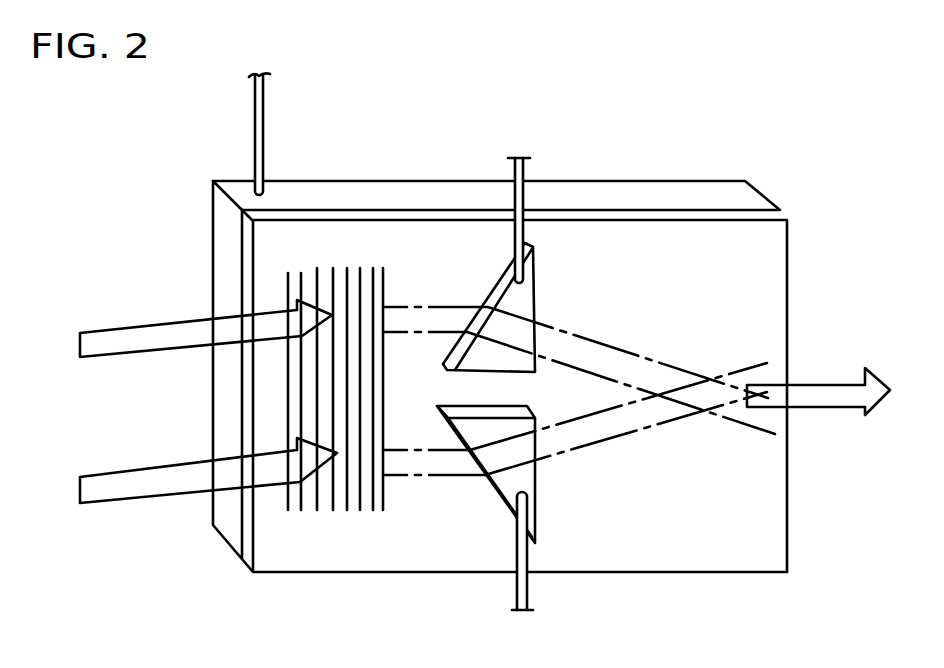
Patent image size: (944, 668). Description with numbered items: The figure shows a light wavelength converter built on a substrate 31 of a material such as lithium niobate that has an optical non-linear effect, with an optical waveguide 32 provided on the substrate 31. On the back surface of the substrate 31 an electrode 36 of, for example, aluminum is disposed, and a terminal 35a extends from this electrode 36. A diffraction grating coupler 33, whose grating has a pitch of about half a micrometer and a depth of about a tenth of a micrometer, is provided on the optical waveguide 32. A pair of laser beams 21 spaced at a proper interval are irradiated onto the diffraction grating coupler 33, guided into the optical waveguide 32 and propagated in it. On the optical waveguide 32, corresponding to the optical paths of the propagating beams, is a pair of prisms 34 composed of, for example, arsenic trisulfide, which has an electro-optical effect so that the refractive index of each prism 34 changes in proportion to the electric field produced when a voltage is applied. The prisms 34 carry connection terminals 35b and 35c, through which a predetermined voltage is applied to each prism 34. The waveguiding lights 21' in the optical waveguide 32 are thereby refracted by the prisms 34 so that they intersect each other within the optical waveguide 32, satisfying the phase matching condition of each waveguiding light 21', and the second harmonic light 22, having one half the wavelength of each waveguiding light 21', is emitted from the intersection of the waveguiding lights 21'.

The laser beams 21 is at (208, 416).
The waveguiding lights 21' is at (579, 391).
The second harmonic light 22 is at (830, 388).
The substrate 31 is at (685, 191).
The optical waveguide 32 is at (778, 211).
The diffraction grating coupler 33 is at (340, 265).
The prisms 34 is at (535, 285).
The terminal 35a is at (264, 104).
The connection terminal 35b is at (523, 193).
The connection terminal 35c is at (530, 594).
The electrode 36 is at (441, 194).